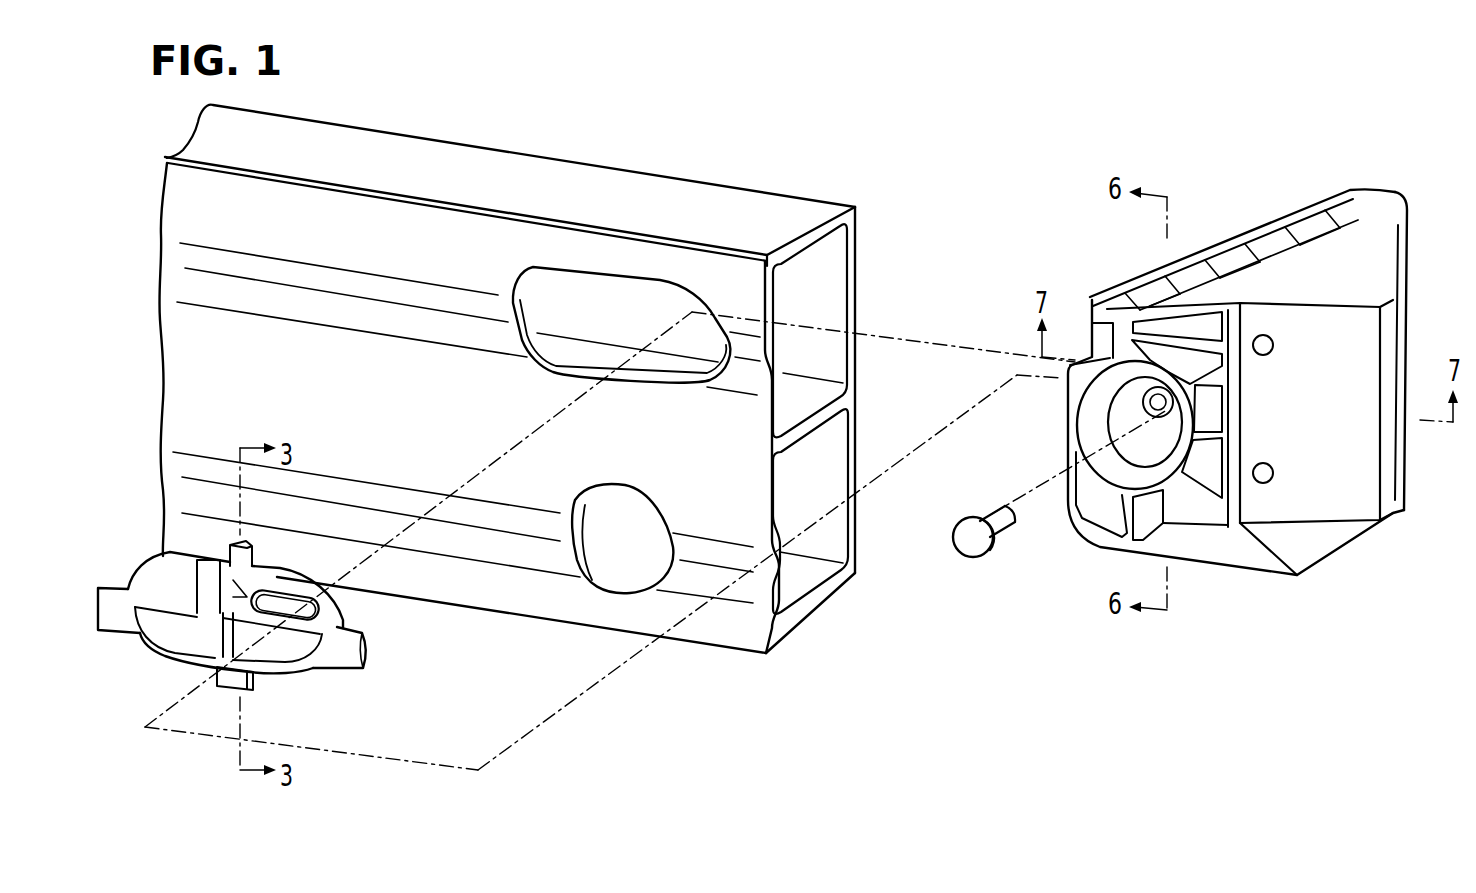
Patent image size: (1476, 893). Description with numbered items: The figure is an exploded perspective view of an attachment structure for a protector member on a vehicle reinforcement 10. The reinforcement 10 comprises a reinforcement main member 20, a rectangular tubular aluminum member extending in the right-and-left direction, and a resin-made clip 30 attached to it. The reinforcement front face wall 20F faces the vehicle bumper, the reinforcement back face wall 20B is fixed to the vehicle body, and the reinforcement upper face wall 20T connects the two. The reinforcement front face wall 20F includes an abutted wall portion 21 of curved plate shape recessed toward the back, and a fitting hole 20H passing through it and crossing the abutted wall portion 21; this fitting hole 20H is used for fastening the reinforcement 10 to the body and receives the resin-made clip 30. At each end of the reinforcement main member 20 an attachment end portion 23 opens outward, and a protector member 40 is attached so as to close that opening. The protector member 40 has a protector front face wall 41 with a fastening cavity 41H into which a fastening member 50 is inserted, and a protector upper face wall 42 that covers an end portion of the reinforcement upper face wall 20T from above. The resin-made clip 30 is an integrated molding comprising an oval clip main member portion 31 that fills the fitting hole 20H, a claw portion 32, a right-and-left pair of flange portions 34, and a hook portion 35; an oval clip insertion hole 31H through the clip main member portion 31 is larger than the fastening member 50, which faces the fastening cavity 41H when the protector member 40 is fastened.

The reinforcement 10 is at (868, 168).
The reinforcement main member 20 is at (177, 500).
The reinforcement upper face wall 20T is at (763, 196).
The reinforcement back face wall 20B is at (862, 209).
The fitting hole 20H is at (536, 268).
The reinforcement front face wall 20F is at (718, 640).
The abutted wall portion 21 is at (173, 286).
The attachment end portion 23 is at (838, 271).
The resin-made clip 30 is at (281, 420).
The clip main member portion 31 is at (150, 652).
The clip insertion hole 31H is at (332, 608).
The claw portion 32 is at (229, 552).
The flange portion 34 is at (117, 586).
The hook portion 35 is at (258, 689).
The protector member 40 is at (1392, 170).
The protector front face wall 41 is at (1340, 543).
The fastening cavity 41H is at (1090, 424).
The protector upper face wall 42 is at (1310, 203).
The fastening member 50 is at (998, 545).